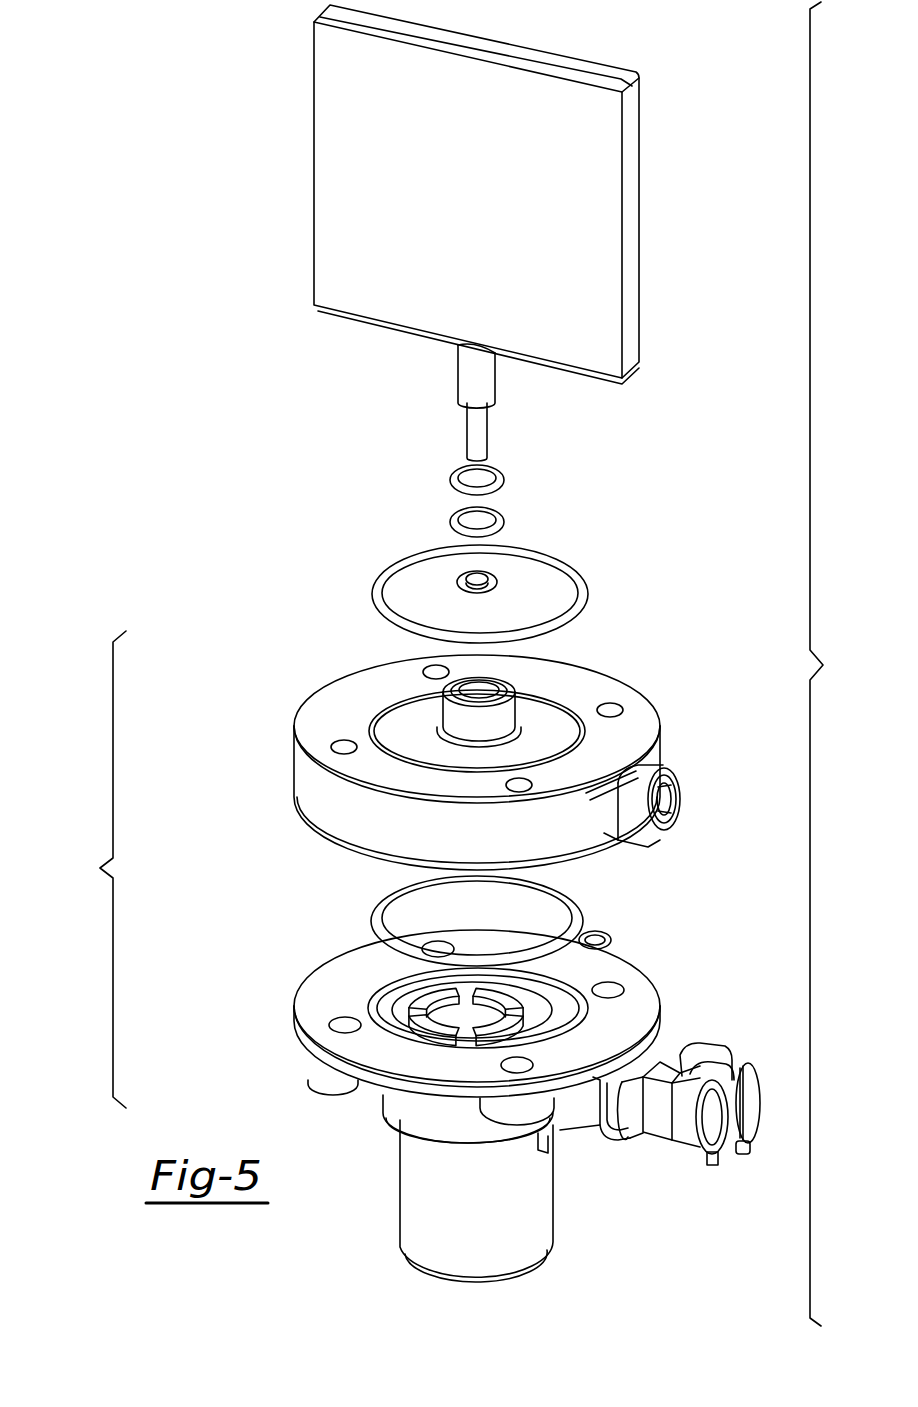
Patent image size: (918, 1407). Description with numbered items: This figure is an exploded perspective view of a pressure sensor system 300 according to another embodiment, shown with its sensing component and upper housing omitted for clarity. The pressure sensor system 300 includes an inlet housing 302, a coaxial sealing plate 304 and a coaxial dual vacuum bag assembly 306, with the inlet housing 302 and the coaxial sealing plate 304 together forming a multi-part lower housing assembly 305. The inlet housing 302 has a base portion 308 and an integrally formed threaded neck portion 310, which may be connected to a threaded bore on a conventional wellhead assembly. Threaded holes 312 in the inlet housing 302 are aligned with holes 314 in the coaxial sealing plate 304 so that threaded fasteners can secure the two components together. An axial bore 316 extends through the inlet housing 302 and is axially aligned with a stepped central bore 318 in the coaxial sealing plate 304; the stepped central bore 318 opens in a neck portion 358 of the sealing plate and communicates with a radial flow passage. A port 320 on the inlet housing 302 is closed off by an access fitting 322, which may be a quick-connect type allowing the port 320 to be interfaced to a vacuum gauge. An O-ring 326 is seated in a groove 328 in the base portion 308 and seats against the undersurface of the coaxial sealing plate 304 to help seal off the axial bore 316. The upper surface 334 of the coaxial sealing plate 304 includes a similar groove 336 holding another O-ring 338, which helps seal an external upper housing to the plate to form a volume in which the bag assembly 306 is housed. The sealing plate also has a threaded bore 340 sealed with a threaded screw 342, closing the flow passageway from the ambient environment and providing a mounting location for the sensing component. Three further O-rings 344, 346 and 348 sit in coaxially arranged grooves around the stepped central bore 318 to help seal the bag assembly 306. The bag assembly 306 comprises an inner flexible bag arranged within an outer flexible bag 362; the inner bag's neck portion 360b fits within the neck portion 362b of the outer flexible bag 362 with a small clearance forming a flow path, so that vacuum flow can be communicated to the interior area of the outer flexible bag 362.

The pressure sensor system 300 is at (836, 664).
The inlet housing 302 is at (458, 1089).
The coaxial sealing plate 304 is at (440, 743).
The multi-part lower housing assembly 305 is at (92, 869).
The coaxial dual vacuum bag assembly 306 is at (404, 194).
The base portion 308 is at (367, 958).
The threaded neck portion 310 is at (417, 1205).
The threaded holes 312 is at (345, 1026).
The holes 314 is at (344, 748).
The axial bore 316 is at (466, 1012).
The stepped central bore 318 is at (480, 692).
The port 320 is at (640, 1126).
The access fitting 322 is at (661, 1121).
The O-ring 326 is at (578, 912).
The groove 328 is at (575, 1000).
The upper surface 334 is at (612, 697).
The groove 336 is at (377, 733).
The O-ring 338 is at (449, 594).
The threaded bore 340 is at (668, 789).
The threaded screw 342 is at (670, 816).
The O-ring 344 is at (453, 478).
The O-ring 346 is at (455, 520).
The O-ring 348 is at (452, 595).
The neck portion 358 is at (453, 712).
The neck portion 360b is at (477, 438).
The outer flexible bag 362 is at (335, 230).
The neck portion 362b is at (462, 374).